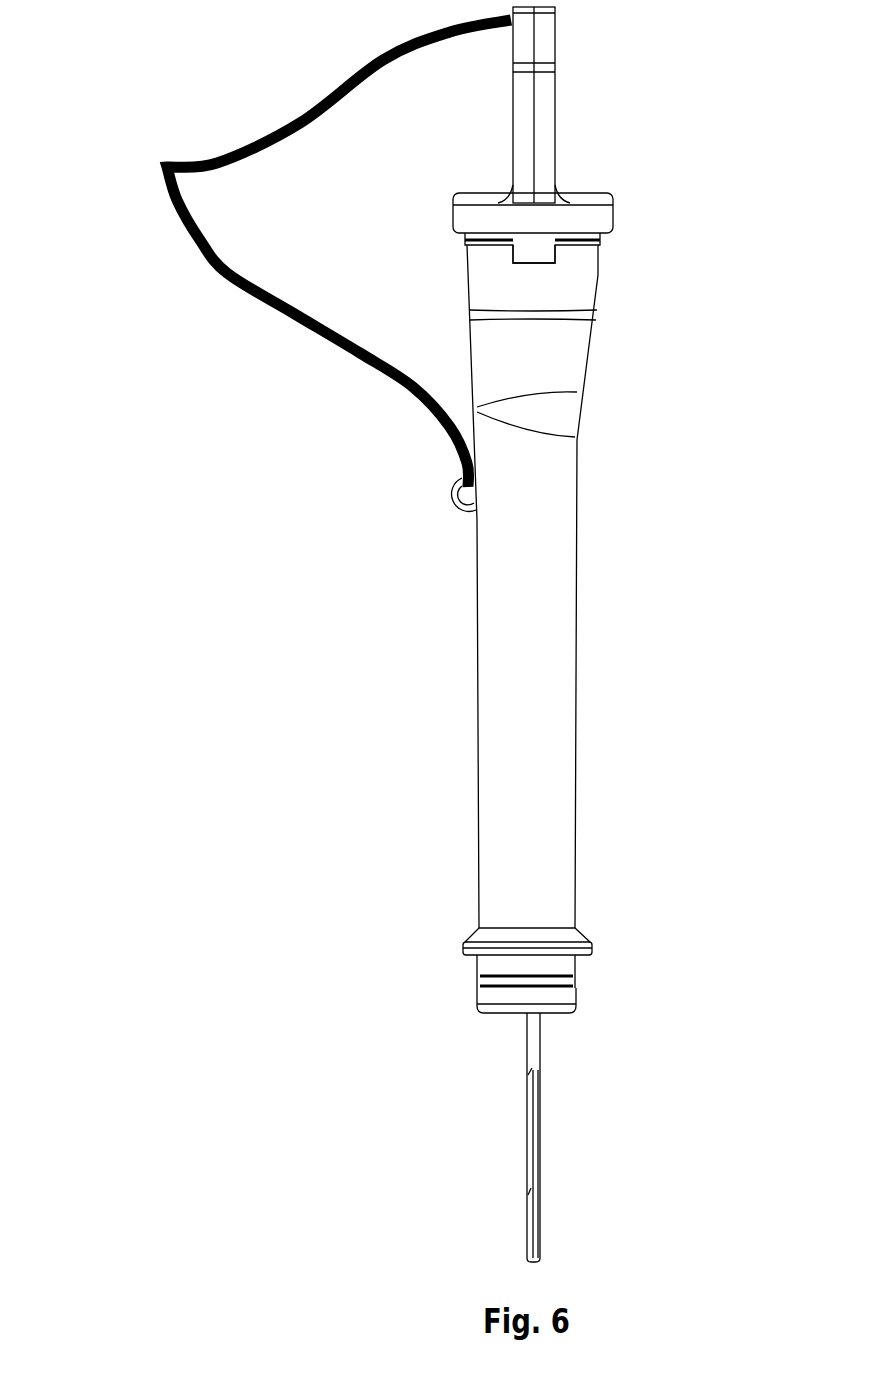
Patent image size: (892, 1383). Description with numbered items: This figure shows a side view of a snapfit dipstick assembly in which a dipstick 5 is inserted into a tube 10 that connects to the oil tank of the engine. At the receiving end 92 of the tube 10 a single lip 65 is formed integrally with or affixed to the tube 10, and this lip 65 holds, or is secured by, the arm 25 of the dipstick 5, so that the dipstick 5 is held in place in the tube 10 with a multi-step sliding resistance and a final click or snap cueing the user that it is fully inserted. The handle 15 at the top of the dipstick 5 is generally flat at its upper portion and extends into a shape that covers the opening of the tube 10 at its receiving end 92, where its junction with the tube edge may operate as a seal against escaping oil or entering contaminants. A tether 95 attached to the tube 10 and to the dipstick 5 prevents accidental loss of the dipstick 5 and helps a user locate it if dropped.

The dipstick 5 is at (528, 1130).
The tube 10 is at (565, 555).
The handle 15 is at (543, 128).
The arm 25 is at (535, 245).
The lip 65 is at (467, 237).
The receiving end 92 is at (598, 264).
The tether 95 is at (183, 243).